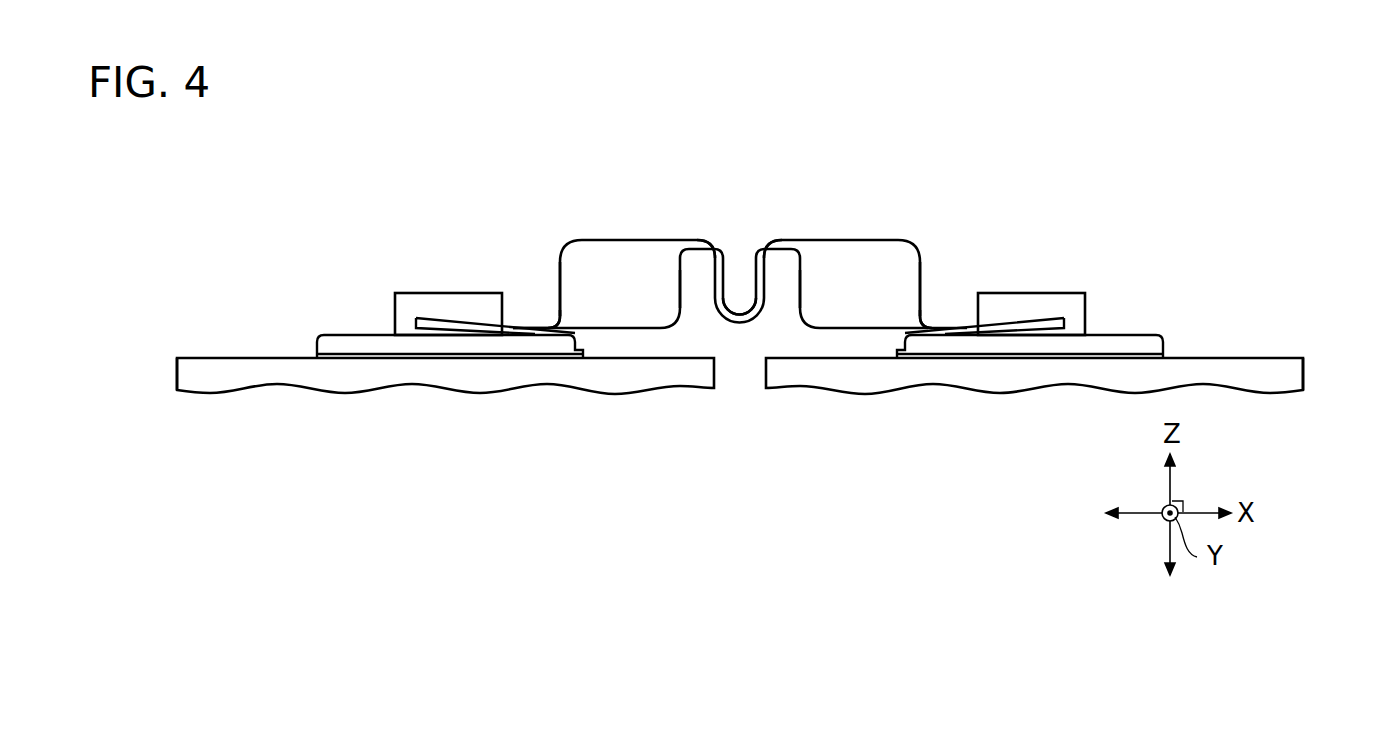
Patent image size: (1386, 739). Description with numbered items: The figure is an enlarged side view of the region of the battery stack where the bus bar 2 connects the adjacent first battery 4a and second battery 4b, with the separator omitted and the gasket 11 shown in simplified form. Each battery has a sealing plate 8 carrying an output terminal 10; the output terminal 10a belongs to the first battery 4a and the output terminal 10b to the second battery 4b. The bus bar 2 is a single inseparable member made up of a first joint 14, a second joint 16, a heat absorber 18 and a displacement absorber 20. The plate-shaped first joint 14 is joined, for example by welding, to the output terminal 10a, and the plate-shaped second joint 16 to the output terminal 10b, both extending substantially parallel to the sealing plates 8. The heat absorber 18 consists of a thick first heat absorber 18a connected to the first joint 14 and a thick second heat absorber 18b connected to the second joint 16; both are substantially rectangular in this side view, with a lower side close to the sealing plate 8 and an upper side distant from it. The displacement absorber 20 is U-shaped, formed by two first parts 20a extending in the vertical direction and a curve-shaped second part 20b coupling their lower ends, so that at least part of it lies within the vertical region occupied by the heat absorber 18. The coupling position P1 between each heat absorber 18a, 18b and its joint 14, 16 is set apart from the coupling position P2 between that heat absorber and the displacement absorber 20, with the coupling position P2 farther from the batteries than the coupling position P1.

The bus bar 2 is at (610, 332).
The first battery 4a is at (177, 378).
The second battery 4b is at (1303, 378).
The sealing plate 8 is at (217, 357).
The output terminal 10 is at (740, 283).
The output terminal 10a is at (394, 312).
The output terminal 10b is at (1086, 312).
The gasket 11 is at (313, 357).
The first joint 14 is at (512, 324).
The second joint 16 is at (966, 324).
The heat absorber 18 is at (740, 248).
The first heat absorber 18a is at (618, 240).
The second heat absorber 18b is at (860, 240).
The displacement absorber 20 is at (730, 401).
The first part 20a is at (707, 295).
The second part 20b is at (740, 325).
The coupling position P1 is at (548, 323).
The coupling position P2 is at (716, 240).